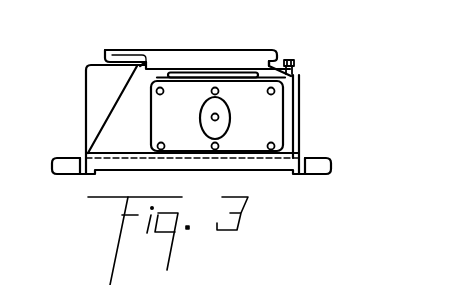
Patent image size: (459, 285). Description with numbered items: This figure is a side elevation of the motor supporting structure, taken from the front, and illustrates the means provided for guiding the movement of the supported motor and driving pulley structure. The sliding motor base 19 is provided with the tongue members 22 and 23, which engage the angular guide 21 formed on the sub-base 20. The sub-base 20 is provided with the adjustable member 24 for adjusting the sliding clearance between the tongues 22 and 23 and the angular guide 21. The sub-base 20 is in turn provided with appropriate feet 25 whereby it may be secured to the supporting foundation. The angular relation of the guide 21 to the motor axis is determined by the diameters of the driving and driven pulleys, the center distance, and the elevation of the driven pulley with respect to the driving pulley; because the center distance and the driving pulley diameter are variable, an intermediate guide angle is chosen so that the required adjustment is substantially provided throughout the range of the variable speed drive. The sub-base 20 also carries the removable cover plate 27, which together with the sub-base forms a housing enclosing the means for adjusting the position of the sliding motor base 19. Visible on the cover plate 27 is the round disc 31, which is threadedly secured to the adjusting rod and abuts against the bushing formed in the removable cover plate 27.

The sliding motor base 19 is at (132, 50).
The sub-base 20 is at (84, 88).
The angular guide 21 is at (152, 74).
The tongue member 22 is at (162, 62).
The tongue member 23 is at (275, 72).
The adjustable member 24 is at (295, 72).
The feet 25 is at (67, 158).
The removable cover plate 27 is at (283, 128).
The round disc 31 is at (201, 116).